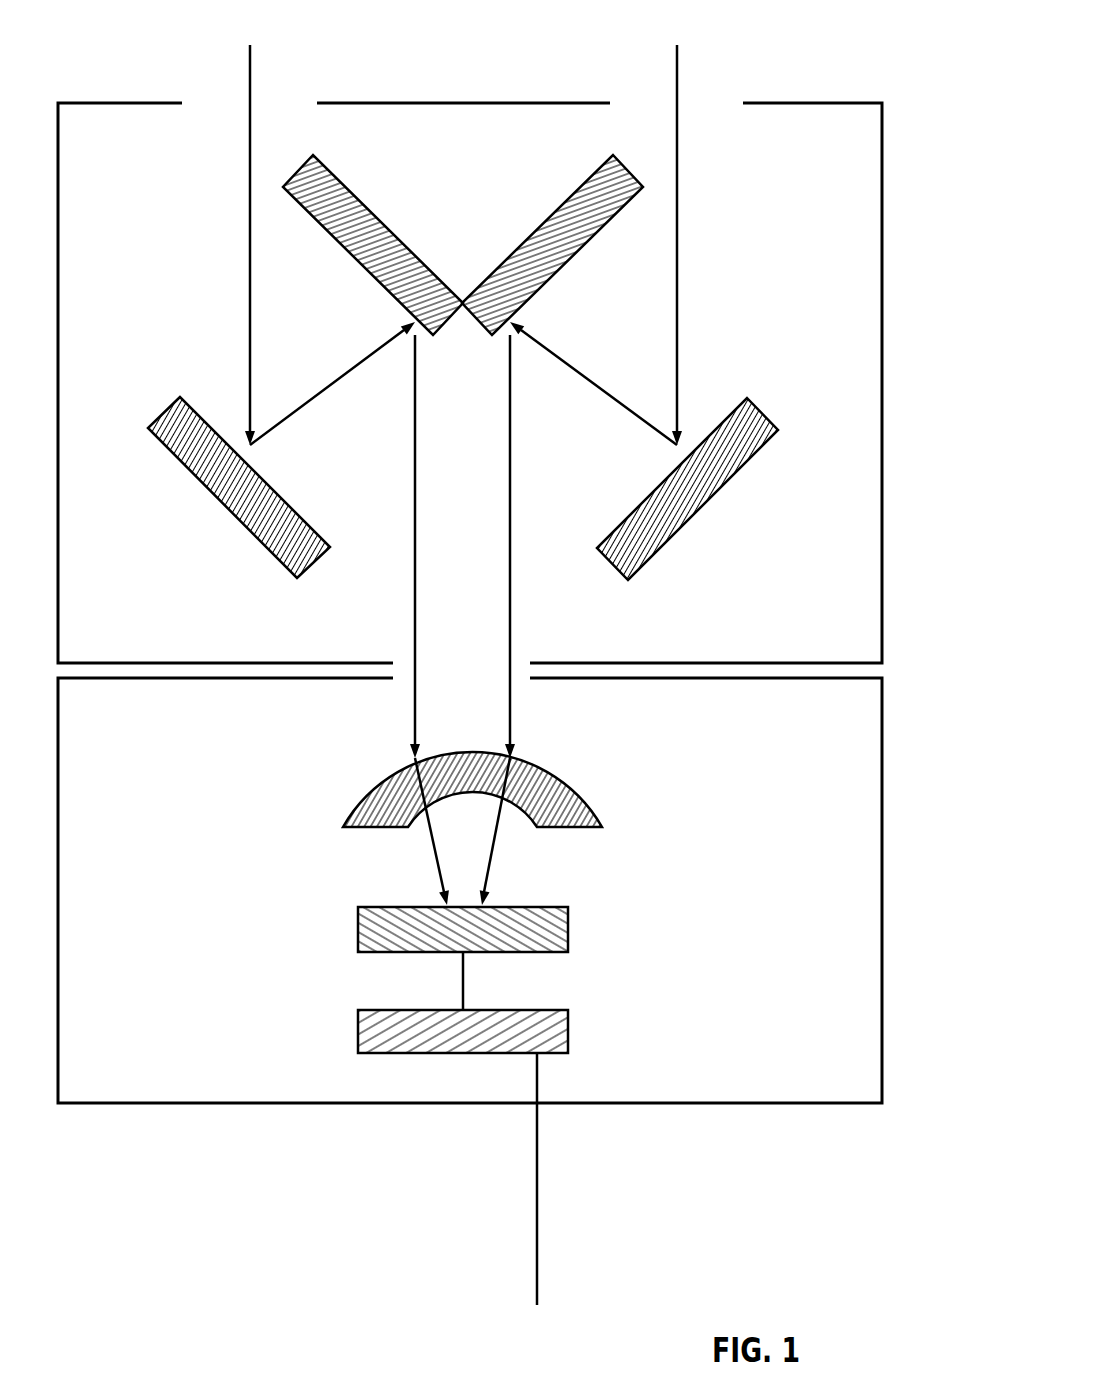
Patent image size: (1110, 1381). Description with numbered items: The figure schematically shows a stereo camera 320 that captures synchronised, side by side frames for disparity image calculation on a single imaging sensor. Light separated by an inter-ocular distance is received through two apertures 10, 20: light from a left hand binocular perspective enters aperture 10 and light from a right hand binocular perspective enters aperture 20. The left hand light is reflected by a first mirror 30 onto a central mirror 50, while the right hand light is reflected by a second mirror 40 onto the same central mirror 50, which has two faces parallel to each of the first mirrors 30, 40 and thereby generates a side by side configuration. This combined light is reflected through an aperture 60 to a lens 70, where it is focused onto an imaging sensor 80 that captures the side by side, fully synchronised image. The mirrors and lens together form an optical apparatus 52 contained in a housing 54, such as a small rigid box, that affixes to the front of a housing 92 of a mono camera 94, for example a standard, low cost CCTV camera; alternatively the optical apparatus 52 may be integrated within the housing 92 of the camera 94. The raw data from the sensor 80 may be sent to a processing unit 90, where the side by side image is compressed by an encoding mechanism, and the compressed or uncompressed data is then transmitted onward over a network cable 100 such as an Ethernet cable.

The aperture 10 is at (241, 114).
The aperture 20 is at (723, 114).
The first mirror 30 is at (213, 529).
The second mirror 40 is at (746, 529).
The central mirror 50 is at (481, 261).
The optical apparatus 52 is at (792, 281).
The housing 54 is at (883, 398).
The aperture 60 is at (481, 684).
The lens 70 is at (646, 827).
The imaging sensor 80 is at (623, 942).
The processing unit 90 is at (623, 1044).
The housing 92 is at (883, 1002).
The mono camera 94 is at (792, 919).
The network cable 100 is at (630, 1167).
The stereo camera 320 is at (838, 32).